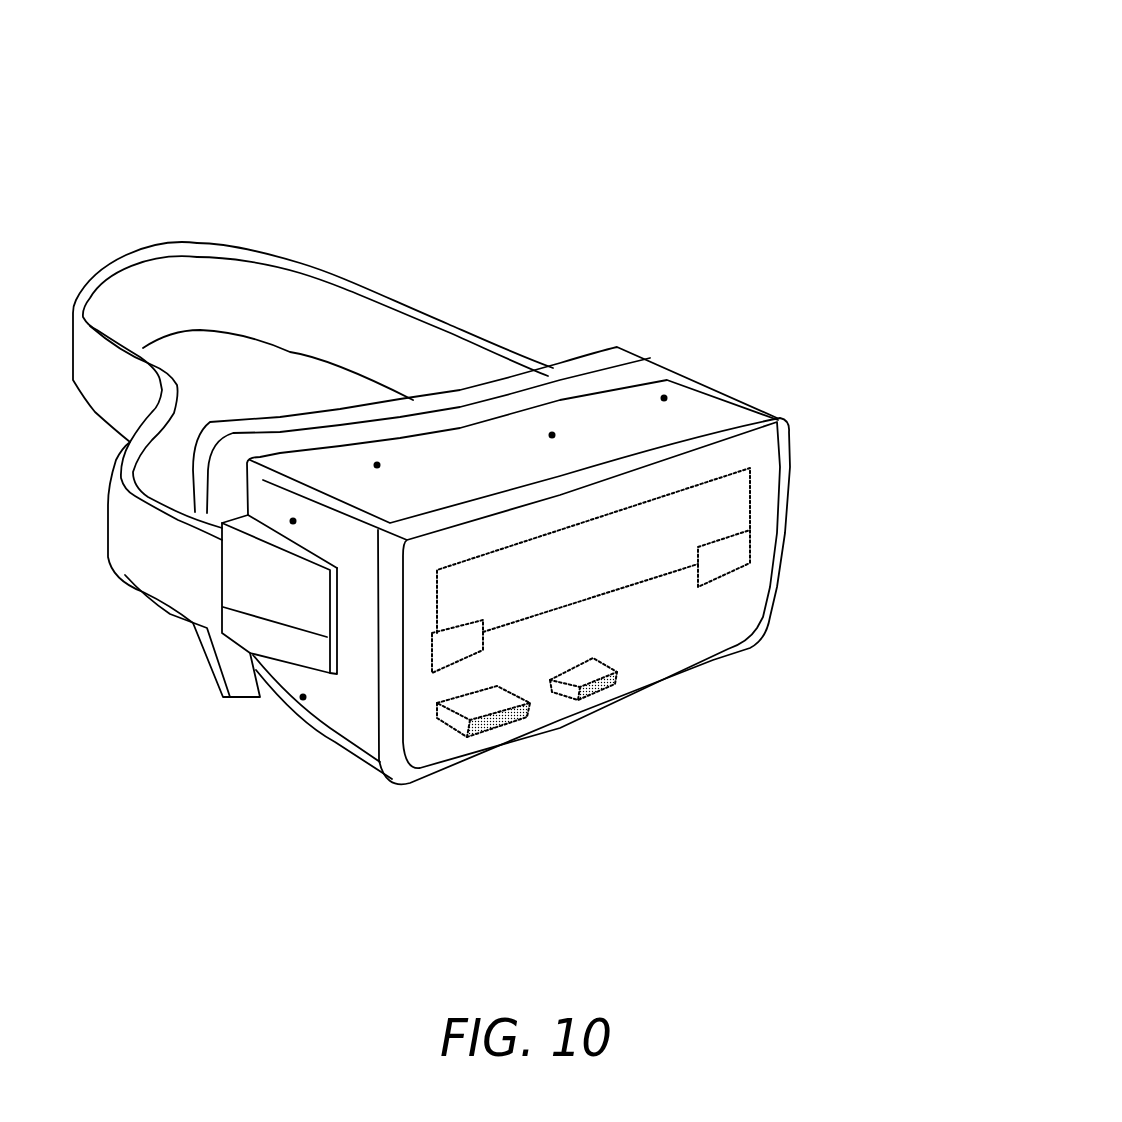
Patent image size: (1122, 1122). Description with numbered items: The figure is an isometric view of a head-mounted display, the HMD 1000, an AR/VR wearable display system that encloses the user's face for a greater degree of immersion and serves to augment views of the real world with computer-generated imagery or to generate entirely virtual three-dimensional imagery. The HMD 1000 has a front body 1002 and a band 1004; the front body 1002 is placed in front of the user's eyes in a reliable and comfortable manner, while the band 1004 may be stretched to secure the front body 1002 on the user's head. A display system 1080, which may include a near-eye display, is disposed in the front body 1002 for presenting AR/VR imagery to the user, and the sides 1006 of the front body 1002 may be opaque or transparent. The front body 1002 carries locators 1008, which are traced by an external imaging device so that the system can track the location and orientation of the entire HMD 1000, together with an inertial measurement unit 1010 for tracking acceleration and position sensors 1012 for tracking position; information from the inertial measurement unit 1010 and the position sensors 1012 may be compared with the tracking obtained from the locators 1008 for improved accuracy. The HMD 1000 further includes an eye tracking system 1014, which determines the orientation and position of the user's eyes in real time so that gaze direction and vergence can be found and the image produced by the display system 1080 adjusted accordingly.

The head-mounted display (HMD) 1000 is at (718, 100).
The front body 1002 is at (778, 382).
The band 1004 is at (198, 258).
The sides 1006 is at (600, 443).
The locators 1008 is at (377, 463).
The inertial measurement unit (IMU) 1010 is at (483, 733).
The position sensors 1012 is at (597, 670).
The eye tracking system 1014 is at (727, 561).
The display system 1080 is at (562, 560).